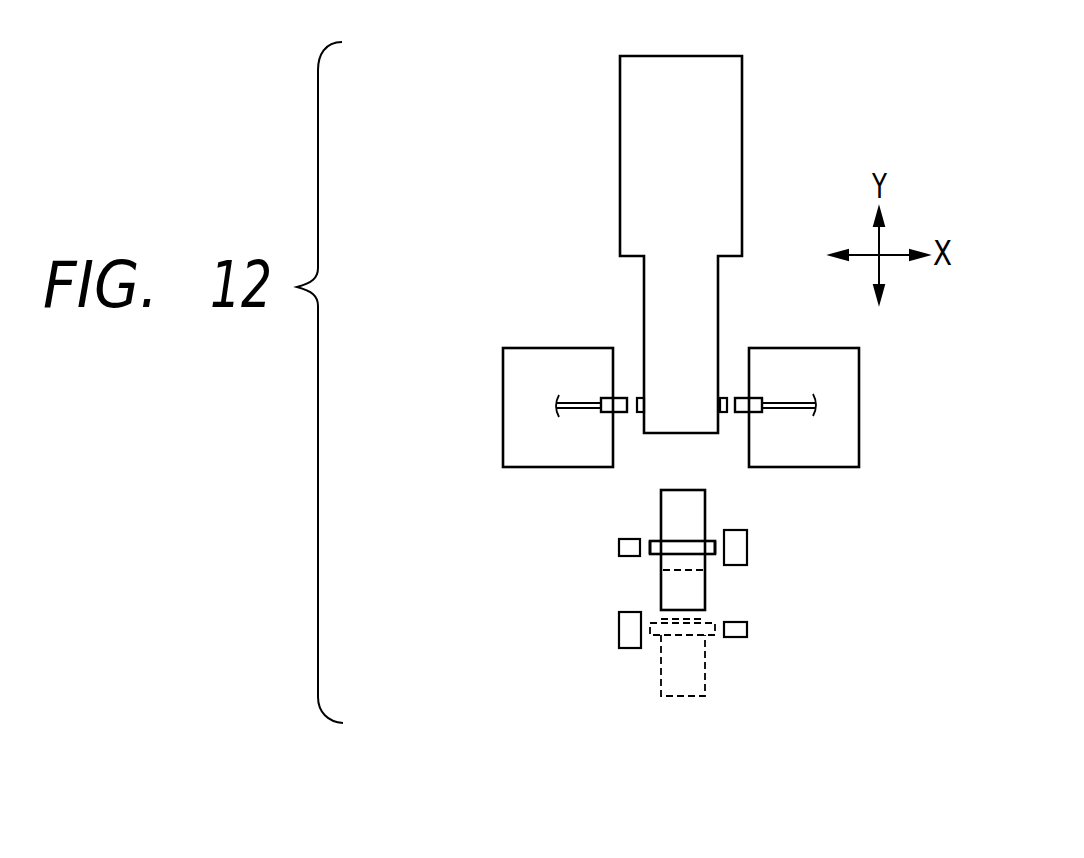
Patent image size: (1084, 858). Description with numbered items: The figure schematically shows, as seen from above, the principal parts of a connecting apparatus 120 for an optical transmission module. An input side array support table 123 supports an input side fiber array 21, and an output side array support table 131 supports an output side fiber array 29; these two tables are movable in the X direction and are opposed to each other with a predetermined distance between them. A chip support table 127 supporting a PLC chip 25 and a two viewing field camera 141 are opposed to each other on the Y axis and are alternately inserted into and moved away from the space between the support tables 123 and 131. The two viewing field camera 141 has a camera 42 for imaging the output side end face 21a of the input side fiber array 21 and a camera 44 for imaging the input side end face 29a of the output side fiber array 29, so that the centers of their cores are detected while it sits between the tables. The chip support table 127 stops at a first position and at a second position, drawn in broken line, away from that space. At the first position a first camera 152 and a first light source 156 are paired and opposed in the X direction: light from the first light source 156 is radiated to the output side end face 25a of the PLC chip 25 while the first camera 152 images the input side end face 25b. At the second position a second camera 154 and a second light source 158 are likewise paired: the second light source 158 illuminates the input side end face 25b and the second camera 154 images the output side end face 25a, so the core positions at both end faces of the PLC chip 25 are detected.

The connecting apparatus 120 is at (484, 170).
The two viewing field camera 141 is at (720, 112).
The input side array support table 123 is at (518, 381).
The output side array support table 131 is at (838, 378).
The input side fiber array 21 is at (603, 398).
The output side end face of the input side fiber array 21a is at (639, 398).
The camera 42 is at (640, 415).
The camera 44 is at (726, 398).
The output side fiber array 29 is at (753, 398).
The input side end face of the output side fiber array 29a is at (735, 413).
The chip support table 127 is at (668, 587).
The PLC chip 25 is at (695, 550).
The output side end face of the PLC chip 25a is at (716, 542).
The input side end face of the PLC chip 25b is at (651, 542).
The first camera 152 is at (618, 548).
The first light source 156 is at (748, 547).
The second light source 158 is at (618, 625).
The second camera 154 is at (748, 628).